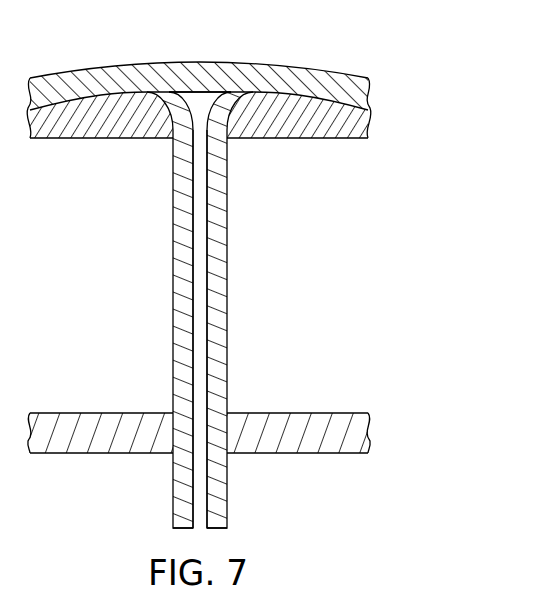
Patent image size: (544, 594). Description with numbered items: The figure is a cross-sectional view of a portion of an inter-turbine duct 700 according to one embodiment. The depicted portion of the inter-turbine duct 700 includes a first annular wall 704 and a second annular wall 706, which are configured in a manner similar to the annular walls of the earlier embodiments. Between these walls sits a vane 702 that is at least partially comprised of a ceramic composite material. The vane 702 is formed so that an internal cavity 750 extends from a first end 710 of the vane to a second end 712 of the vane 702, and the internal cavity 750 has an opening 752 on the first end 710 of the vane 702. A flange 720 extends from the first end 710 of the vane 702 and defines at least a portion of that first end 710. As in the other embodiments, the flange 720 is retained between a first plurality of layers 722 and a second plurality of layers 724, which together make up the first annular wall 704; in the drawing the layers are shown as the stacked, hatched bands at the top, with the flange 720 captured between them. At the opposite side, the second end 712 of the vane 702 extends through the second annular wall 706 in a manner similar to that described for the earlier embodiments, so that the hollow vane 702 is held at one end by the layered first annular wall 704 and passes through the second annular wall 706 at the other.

The inter-turbine duct 700 is at (282, 270).
The vane 702 is at (218, 277).
The first annular wall 704 is at (242, 103).
The second annular wall 706 is at (360, 437).
The first end 710 is at (170, 91).
The second end 712 is at (218, 498).
The flange 720 is at (253, 91).
The first plurality of layers 722 is at (316, 124).
The second plurality of layers 724 is at (322, 91).
The internal cavity 750 is at (197, 275).
The opening 752 is at (208, 100).